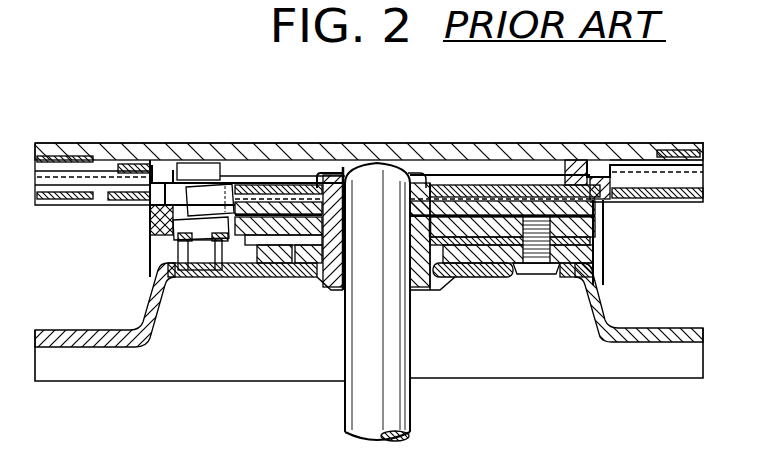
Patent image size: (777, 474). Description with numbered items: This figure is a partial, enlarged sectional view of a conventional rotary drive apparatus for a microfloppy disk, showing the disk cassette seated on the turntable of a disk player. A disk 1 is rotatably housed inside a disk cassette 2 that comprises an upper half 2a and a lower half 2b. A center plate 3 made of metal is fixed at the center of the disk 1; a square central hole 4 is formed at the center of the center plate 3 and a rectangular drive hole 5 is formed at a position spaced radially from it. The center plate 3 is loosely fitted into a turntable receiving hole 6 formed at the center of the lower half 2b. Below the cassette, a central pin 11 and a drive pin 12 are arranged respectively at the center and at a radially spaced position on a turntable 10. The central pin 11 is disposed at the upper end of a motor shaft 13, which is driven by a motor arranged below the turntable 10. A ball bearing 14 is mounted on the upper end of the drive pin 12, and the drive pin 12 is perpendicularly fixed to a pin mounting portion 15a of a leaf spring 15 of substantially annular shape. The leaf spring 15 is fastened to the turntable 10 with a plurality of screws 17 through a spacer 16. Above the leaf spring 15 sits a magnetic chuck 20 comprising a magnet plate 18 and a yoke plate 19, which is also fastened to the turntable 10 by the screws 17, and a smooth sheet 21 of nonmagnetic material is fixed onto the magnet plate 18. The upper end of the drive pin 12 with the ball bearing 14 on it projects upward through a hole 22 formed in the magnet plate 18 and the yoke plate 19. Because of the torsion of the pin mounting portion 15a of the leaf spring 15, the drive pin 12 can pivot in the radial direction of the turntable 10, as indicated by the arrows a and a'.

The disk 1 is at (47, 152).
The disk cassette 2 is at (88, 110).
The upper half 2a is at (100, 157).
The lower half 2b is at (103, 201).
The center plate 3 is at (543, 187).
The central hole 4 is at (336, 170).
The drive hole 5 is at (264, 274).
The turntable receiving hole 6 is at (619, 193).
The turntable 10 is at (299, 293).
The central pin 11 is at (373, 190).
The drive pin 12 is at (153, 238).
The motor shaft 13 is at (397, 396).
The ball bearing 14 is at (207, 193).
The leaf spring 15 is at (470, 274).
The pin mounting portion 15a is at (187, 273).
The spacer 16 is at (498, 273).
The screws 17 is at (549, 277).
The magnet plate 18 is at (481, 206).
The yoke plate 19 is at (570, 217).
The magnetic chuck 20 is at (607, 236).
The smooth sheet 21 is at (449, 192).
The hole 22 is at (237, 273).
The arrow a is at (247, 192).
The arrow a' is at (278, 161).